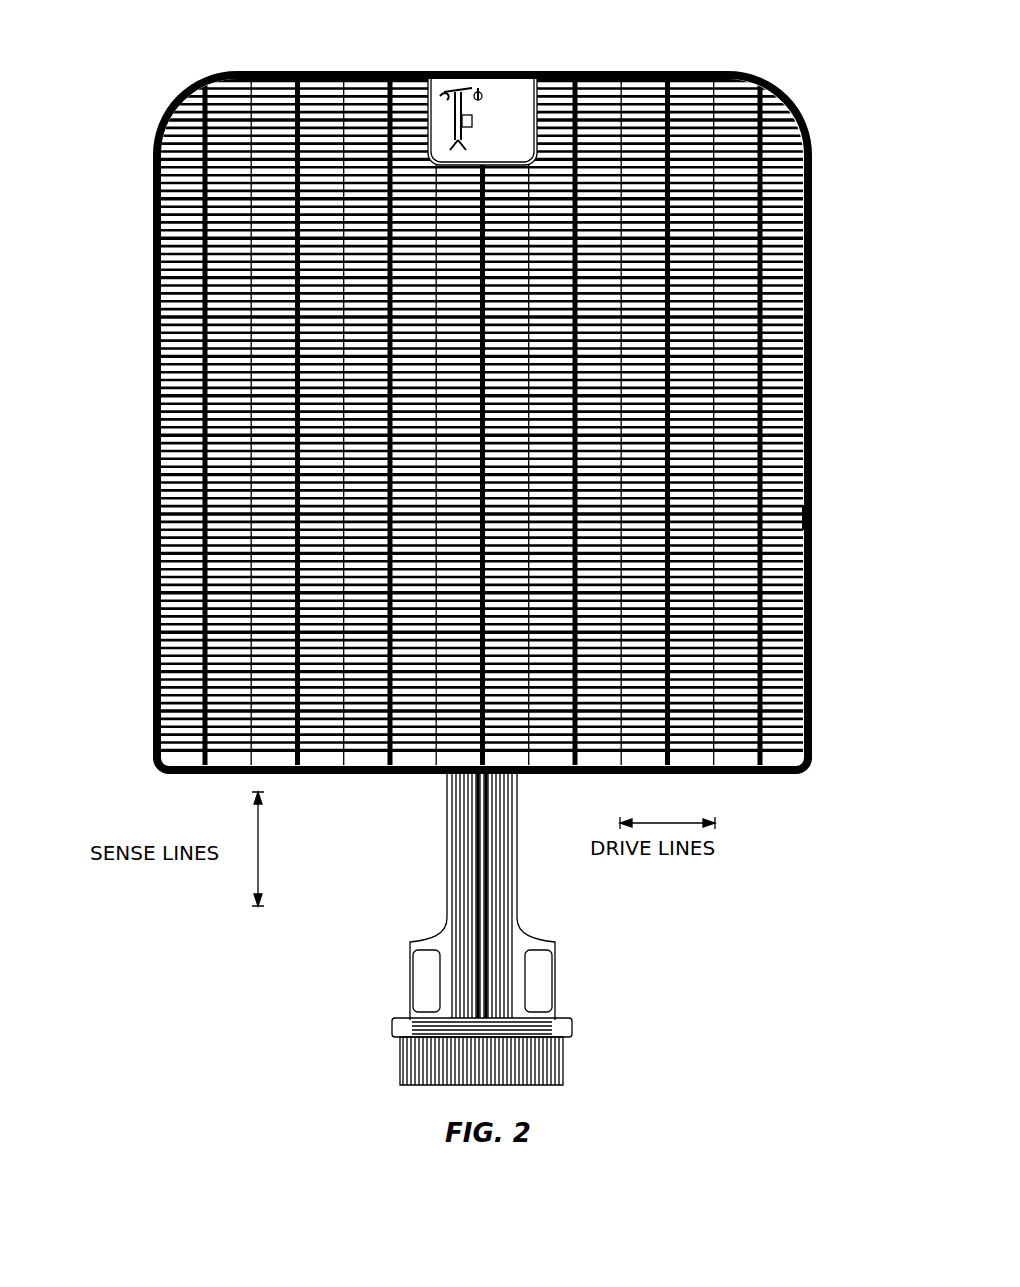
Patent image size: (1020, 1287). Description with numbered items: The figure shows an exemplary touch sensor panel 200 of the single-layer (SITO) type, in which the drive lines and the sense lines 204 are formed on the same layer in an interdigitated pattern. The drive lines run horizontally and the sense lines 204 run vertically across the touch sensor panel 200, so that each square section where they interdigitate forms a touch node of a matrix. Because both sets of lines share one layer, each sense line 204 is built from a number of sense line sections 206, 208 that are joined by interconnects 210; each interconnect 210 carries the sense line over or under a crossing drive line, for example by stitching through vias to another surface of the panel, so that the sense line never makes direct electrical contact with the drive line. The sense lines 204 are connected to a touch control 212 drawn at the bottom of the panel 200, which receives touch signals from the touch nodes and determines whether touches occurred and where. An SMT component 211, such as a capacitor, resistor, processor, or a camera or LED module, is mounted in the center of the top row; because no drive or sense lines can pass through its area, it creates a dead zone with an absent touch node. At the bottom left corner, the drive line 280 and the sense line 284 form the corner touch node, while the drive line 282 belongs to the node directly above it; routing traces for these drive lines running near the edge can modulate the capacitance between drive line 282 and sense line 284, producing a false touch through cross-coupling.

The touch sensor panel 200 is at (815, 410).
The sense lines 204 is at (765, 78).
The sense line section 206 is at (812, 516).
The sense line section 208 is at (812, 566).
The interconnect 210 is at (812, 544).
The SMT component 211 is at (448, 70).
The touch control 212 is at (565, 1072).
The drive line 280 is at (150, 642).
The drive line 282 is at (150, 622).
The sense line 284 is at (205, 772).